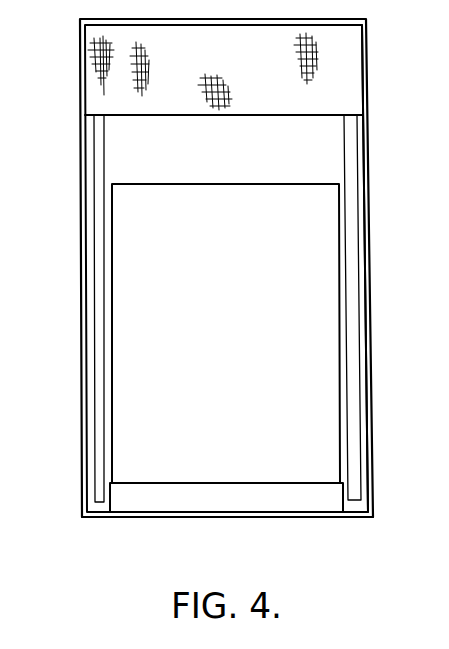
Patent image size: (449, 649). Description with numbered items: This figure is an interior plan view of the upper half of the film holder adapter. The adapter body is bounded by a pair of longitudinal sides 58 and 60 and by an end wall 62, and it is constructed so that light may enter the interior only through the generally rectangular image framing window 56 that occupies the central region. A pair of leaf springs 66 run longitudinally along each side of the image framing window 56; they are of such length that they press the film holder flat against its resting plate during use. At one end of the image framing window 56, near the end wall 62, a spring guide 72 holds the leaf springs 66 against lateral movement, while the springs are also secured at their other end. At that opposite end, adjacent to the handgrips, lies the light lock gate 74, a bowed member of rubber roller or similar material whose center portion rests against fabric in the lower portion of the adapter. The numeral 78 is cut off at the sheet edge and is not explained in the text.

The image framing window 56 is at (305, 352).
The longitudinal side 58 is at (84, 276).
The longitudinal side 60 is at (365, 267).
The end wall 62 is at (193, 518).
The leaf springs 66 is at (101, 215).
The spring guide 72 is at (282, 497).
The light lock gate 74 is at (325, 92).
The element 78 is at (443, 404).